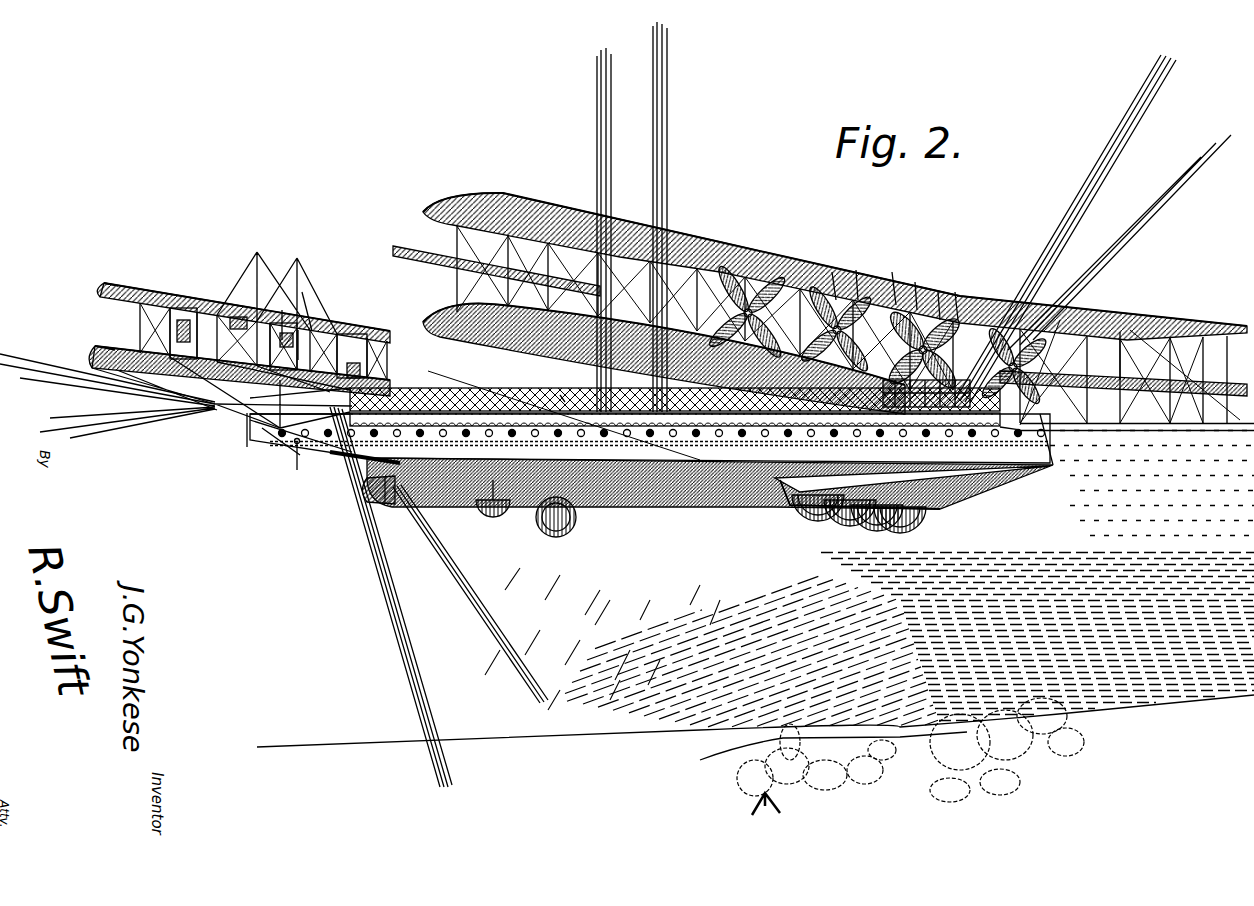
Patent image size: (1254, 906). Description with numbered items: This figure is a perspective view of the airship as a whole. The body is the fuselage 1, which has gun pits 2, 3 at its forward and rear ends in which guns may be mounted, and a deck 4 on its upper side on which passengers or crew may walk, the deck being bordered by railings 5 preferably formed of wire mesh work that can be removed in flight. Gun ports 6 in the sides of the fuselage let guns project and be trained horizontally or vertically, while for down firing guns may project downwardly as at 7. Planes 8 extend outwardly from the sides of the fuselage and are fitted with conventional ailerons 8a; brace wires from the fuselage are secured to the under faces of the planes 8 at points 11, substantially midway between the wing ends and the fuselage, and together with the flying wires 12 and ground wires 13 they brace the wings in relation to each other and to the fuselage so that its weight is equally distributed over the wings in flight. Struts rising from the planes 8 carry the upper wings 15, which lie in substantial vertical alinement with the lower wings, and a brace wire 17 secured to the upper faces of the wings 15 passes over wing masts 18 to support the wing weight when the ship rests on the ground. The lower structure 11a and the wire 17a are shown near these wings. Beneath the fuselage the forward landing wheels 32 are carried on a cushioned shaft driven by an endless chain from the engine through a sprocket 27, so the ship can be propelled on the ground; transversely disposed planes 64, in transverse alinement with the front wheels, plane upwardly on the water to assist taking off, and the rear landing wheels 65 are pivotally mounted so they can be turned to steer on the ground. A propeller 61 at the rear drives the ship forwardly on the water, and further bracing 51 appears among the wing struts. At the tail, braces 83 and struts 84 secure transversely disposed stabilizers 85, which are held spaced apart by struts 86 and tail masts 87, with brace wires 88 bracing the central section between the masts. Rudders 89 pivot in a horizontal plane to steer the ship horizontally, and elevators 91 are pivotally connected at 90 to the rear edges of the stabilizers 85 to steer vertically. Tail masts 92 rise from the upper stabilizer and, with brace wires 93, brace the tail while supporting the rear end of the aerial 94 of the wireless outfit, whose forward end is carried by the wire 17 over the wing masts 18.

The fuselage 1 is at (662, 478).
The gun pit 2 is at (925, 386).
The gun pit 3 is at (278, 445).
The deck 4 is at (526, 398).
The railings 5 is at (500, 398).
The gun ports 6 is at (598, 418).
The down firing gun position 7 is at (297, 470).
The planes 8 is at (1095, 432).
The ailerons 8a is at (1120, 432).
The securing points 11 is at (680, 345).
The far lower wing 11a is at (1195, 395).
The flying wires 12 is at (1002, 310).
The ground wires 13 is at (1122, 345).
The upper wings 15 is at (1062, 312).
The brace wire 17 is at (1120, 332).
The shaft bearing 17a is at (938, 292).
The wing masts 18 is at (915, 282).
The sprocket 27 is at (832, 272).
The wheels 32 is at (878, 530).
The struts and wires 51 is at (1060, 420).
The propeller 61 is at (375, 502).
The transversely disposed planes 64 is at (930, 507).
The rear landing wheels 65 is at (548, 532).
The braces 83 is at (260, 418).
The struts 84 is at (215, 410).
The stabilizers 85 is at (130, 352).
The struts 86 is at (390, 352).
The tail masts 87 is at (298, 330).
The brace wires 88 is at (302, 292).
The rudders 89 is at (382, 366).
The pivot 90 is at (95, 355).
The elevators 91 is at (93, 356).
The tail masts 92 is at (299, 258).
The brace wires 93 is at (195, 312).
The aerial 94 is at (380, 250).